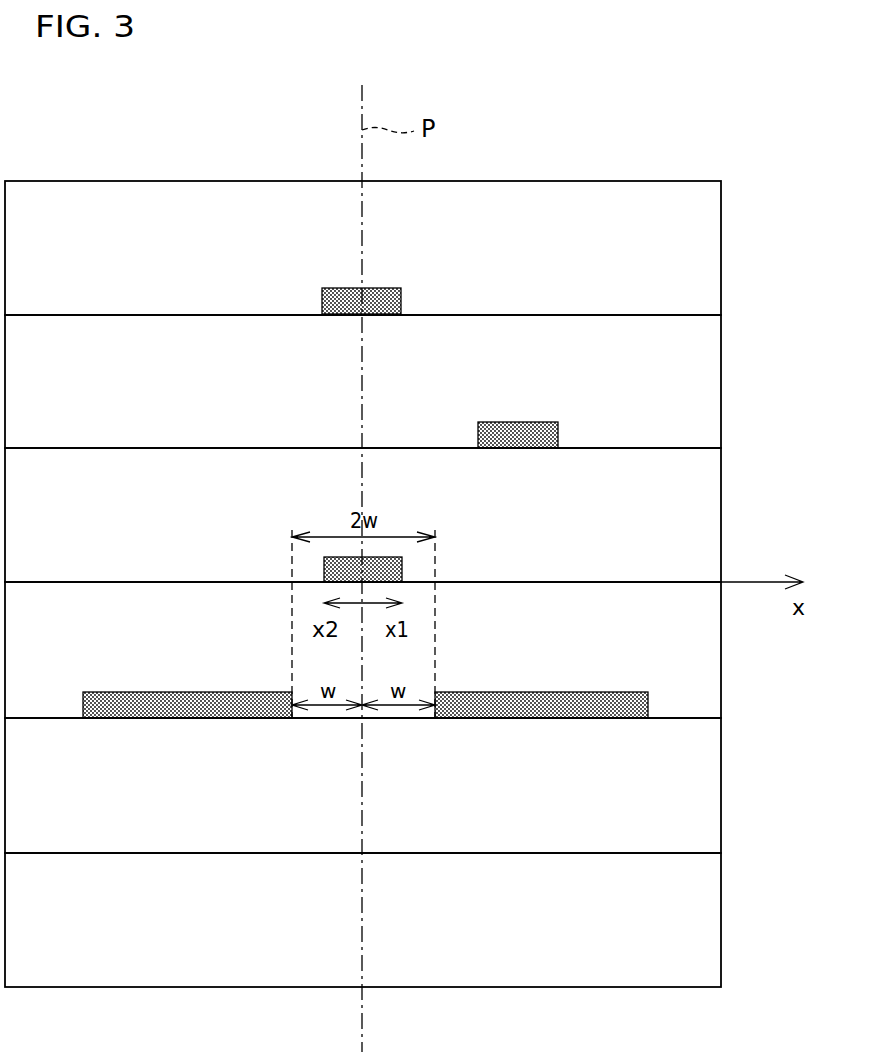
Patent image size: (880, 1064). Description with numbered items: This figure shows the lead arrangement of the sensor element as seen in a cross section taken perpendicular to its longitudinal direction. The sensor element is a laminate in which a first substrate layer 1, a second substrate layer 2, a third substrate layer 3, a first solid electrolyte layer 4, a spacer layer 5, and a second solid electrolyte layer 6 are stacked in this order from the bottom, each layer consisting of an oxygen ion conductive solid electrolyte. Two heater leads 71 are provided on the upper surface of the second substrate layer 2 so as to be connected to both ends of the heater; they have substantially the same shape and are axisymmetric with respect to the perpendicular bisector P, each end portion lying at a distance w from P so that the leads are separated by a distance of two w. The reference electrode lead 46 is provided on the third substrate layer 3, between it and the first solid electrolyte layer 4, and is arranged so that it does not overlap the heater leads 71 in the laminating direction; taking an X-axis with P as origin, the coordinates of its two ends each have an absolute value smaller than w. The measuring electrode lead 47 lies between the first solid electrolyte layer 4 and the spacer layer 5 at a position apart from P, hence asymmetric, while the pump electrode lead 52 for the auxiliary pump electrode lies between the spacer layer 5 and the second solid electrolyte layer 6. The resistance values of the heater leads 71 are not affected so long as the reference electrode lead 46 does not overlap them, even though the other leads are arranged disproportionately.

The first substrate layer 1 is at (703, 940).
The second substrate layer 2 is at (703, 809).
The third substrate layer 3 is at (703, 657).
The first solid electrolyte layer 4 is at (703, 519).
The spacer layer 5 is at (703, 382).
The second solid electrolyte layer 6 is at (703, 258).
The reference electrode lead 46 is at (390, 565).
The measuring electrode lead 47 is at (558, 437).
The pump electrode lead 52 is at (401, 298).
The heater leads 71 is at (185, 705).